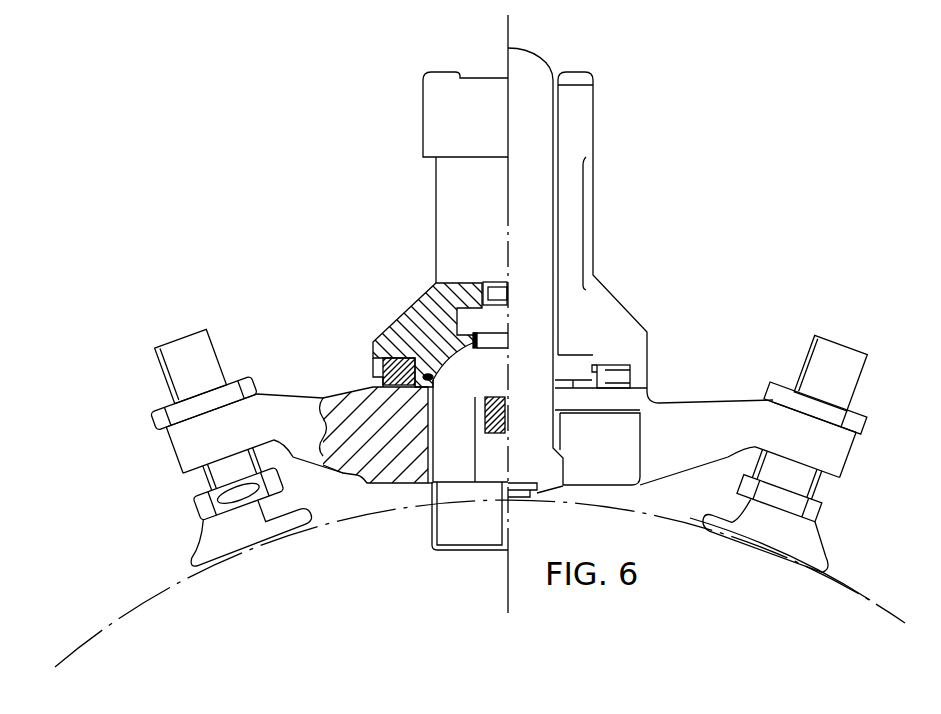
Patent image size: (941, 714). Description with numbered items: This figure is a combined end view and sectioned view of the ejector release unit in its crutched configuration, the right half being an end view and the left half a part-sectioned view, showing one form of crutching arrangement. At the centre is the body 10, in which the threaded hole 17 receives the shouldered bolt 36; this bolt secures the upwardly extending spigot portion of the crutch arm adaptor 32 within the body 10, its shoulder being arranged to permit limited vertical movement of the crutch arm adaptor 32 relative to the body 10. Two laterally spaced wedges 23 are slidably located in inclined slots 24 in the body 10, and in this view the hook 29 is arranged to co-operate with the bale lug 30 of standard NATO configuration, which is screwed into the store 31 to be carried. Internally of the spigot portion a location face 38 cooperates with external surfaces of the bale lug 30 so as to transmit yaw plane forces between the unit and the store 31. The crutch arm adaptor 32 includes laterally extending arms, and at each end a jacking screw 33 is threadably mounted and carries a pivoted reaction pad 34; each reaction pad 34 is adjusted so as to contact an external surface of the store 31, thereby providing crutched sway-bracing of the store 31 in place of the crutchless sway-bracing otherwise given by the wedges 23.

The body 10 is at (452, 110).
The threaded hole 17 is at (388, 296).
The shouldered bolt 36 is at (493, 323).
The inclined slots 24 is at (338, 367).
The wedges 23 is at (467, 417).
The hook 29 is at (497, 398).
The bale lug 30 is at (455, 462).
The crutch arm adaptor 32 is at (352, 430).
The location face 38 is at (425, 453).
The store 31 is at (848, 588).
The jacking screw 33 is at (178, 363).
The reaction pad 34 is at (237, 530).